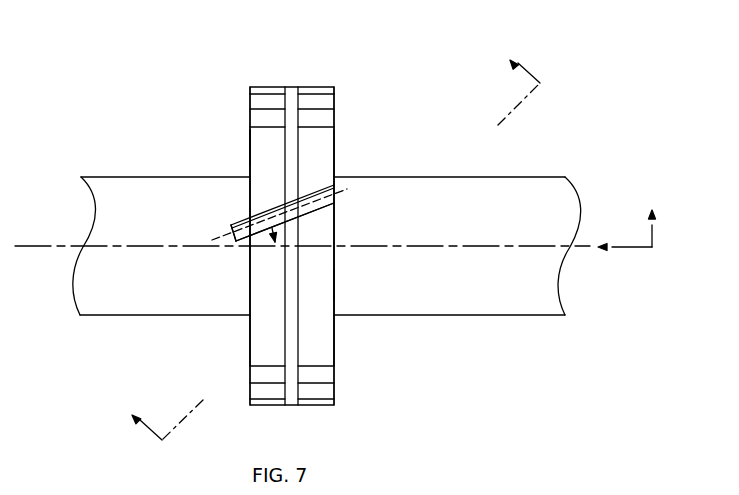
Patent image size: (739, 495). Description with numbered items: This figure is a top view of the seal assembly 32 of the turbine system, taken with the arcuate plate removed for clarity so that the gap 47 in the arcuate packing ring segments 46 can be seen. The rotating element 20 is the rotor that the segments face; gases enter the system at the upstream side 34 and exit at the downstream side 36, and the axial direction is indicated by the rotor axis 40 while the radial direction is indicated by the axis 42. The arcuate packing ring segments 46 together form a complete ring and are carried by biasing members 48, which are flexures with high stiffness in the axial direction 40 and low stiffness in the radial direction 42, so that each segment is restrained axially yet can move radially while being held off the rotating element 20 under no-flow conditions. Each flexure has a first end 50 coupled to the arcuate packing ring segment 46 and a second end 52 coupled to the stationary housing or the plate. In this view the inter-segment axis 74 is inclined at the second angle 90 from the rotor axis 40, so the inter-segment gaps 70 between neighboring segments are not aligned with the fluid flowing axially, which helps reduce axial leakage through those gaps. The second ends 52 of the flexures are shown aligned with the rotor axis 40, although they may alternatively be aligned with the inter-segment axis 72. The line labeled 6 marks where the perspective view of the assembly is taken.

The section line 6- 6 is at (327, 241).
The rotating element 20 is at (518, 303).
The seal assembly 32 is at (368, 72).
The upstream side 34 is at (158, 138).
The downstream side 36 is at (410, 140).
The axial direction 40 is at (628, 247).
The radial direction 42 is at (652, 225).
The arcuate packing ring segment 46 is at (250, 147).
The gap 47 is at (293, 95).
The biasing member 48 is at (320, 143).
The first end 50 is at (337, 188).
The second end 52 is at (322, 125).
The inter-segment gap 70 is at (341, 201).
The inter-segment axis 72 is at (348, 190).
The inter-segment axis 74 is at (234, 240).
The second angle 90 is at (264, 248).